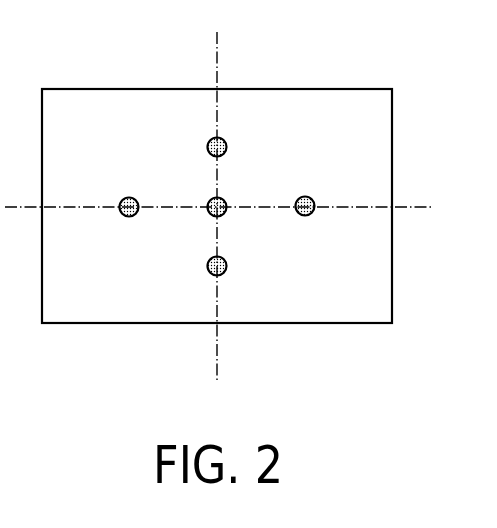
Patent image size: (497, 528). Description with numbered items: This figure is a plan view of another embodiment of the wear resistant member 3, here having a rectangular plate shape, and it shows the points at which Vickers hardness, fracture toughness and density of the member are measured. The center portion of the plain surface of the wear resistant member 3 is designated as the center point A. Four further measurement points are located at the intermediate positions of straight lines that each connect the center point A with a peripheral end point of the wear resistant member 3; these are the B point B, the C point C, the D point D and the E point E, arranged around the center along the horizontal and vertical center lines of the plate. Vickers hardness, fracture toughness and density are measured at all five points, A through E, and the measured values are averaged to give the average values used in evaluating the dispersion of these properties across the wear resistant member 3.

The wear resistant member 3 is at (108, 87).
The center point A is at (212, 215).
The B point B is at (207, 145).
The C point C is at (297, 212).
The D point D is at (206, 262).
The E point E is at (121, 214).